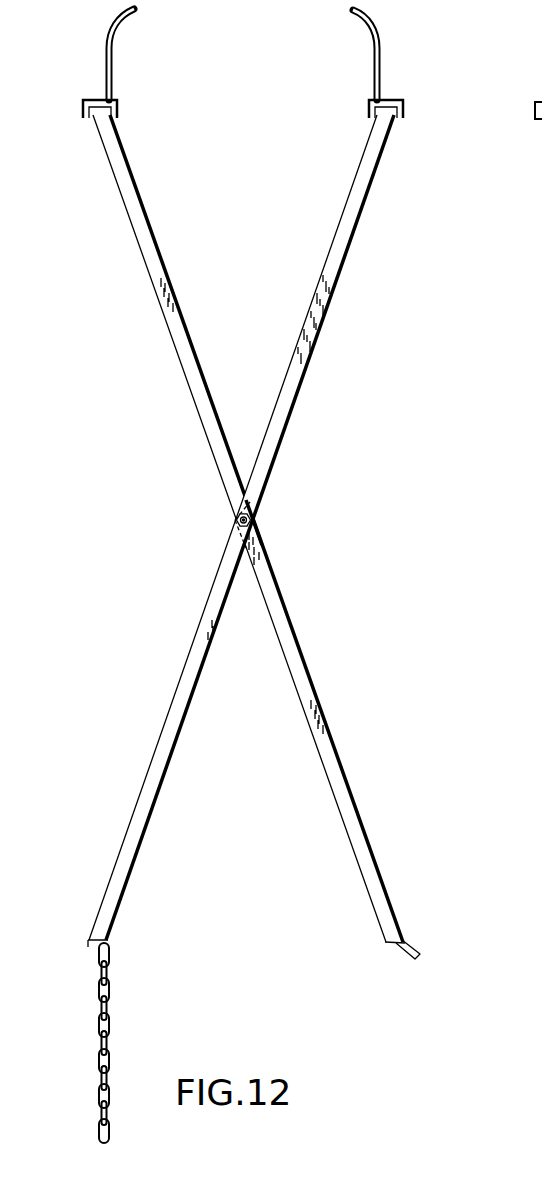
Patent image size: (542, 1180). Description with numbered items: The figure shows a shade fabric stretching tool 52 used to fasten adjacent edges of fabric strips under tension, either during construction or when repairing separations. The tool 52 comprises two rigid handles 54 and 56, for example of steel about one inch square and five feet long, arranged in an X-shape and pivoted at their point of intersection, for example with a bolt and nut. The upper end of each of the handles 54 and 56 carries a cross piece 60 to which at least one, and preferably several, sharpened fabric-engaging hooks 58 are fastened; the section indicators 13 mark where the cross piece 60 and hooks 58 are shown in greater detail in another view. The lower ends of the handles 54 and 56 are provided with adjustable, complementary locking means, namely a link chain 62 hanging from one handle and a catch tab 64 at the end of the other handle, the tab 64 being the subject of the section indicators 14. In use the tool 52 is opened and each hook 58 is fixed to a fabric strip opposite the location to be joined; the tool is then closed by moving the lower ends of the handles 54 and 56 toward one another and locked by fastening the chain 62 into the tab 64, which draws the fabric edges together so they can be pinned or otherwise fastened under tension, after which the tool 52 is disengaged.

The fabric stretching tool 52 is at (120, 507).
The rigid handle 54 is at (193, 652).
The rigid handle 56 is at (276, 603).
The fabric-engaging hook 58 is at (107, 43).
The cross piece 60 is at (80, 105).
The link chain 62 is at (100, 1045).
The catch tab 64 is at (412, 959).
The section line 13- 13 is at (418, 0).
The section line 14- 14 is at (438, 880).